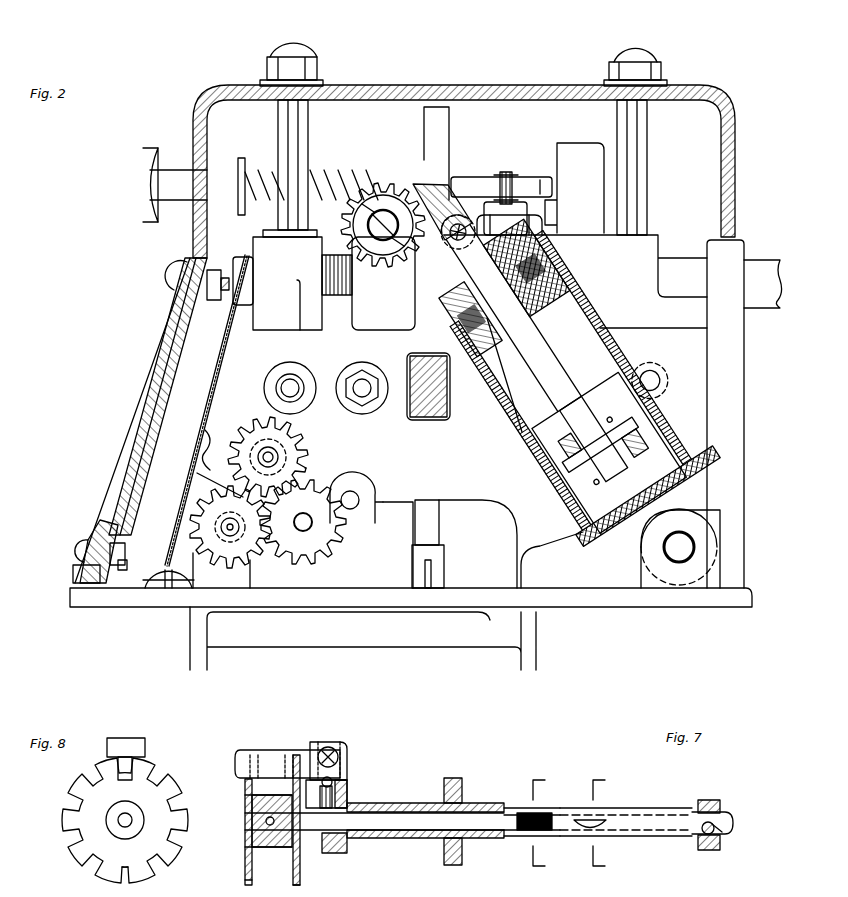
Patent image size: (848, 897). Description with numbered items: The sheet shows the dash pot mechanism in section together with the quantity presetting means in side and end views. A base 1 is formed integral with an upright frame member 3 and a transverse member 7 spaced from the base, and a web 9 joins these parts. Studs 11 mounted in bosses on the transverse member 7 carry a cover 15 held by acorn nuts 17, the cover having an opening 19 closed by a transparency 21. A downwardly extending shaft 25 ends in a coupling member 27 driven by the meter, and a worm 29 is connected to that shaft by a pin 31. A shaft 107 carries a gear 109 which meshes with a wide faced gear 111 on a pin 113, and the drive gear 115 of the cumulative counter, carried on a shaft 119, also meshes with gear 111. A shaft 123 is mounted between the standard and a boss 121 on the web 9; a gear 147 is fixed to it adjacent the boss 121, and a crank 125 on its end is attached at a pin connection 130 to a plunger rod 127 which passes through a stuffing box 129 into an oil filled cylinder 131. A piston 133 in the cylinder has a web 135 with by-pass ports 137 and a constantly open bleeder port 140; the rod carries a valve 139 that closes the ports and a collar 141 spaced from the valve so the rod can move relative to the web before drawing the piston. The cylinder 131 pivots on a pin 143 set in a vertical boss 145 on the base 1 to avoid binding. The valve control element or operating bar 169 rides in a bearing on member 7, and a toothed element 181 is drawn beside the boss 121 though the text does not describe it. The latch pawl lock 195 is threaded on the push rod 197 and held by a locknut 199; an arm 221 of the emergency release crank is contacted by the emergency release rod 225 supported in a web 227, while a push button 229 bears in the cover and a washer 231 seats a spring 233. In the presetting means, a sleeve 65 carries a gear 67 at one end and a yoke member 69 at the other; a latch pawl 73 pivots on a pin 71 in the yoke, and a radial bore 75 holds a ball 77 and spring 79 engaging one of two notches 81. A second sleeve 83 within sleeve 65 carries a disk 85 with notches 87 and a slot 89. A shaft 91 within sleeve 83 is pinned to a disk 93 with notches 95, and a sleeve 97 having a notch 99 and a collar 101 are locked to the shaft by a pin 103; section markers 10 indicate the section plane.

In FIG. 2, the base 1 is at (598, 622).
In FIG. 2, the upright frame member 3 is at (746, 403).
In FIG. 2, the transverse member 7 is at (646, 326).
In FIG. 2, the web 9 is at (525, 517).
In FIG. 7, the web 9 is at (543, 820).
In FIG. 7, the section line 10 is at (606, 820).
In FIG. 2, the studs 11 is at (306, 140).
In FIG. 2, the cover 15 is at (500, 92).
In FIG. 2, the acorn nuts 17 is at (306, 52).
In FIG. 2, the opening 19 is at (112, 500).
In FIG. 2, the transparency 21 is at (142, 468).
In FIG. 2, the shaft 25 is at (438, 518).
In FIG. 2, the coupling member 27 is at (444, 558).
In FIG. 2, the worm 29 is at (407, 415).
In FIG. 2, the pin 31 is at (424, 360).
In FIG. 7, the sleeve 65 is at (383, 805).
In FIG. 7, the gear 67 is at (458, 780).
In FIG. 8, the yoke member 69 is at (143, 745).
In FIG. 7, the yoke member 69 is at (338, 853).
In FIG. 7, the pin 71 is at (330, 745).
In FIG. 8, the latch pawl 73 is at (124, 750).
In FIG. 7, the latch pawl 73 is at (270, 752).
In FIG. 7, the radial bore 75 is at (347, 792).
In FIG. 7, the ball 77 is at (338, 782).
In FIG. 7, the spring 79 is at (334, 780).
In FIG. 7, the notches 81 is at (318, 740).
In FIG. 7, the second sleeve 83 is at (482, 807).
In FIG. 7, the disk 85 is at (300, 858).
In FIG. 7, the notches 87 is at (300, 880).
In FIG. 7, the slot 89 is at (545, 815).
In FIG. 8, the shaft 91 is at (132, 820).
In FIG. 7, the shaft 91 is at (250, 828).
In FIG. 8, the disk 93 is at (170, 780).
In FIG. 7, the disk 93 is at (245, 795).
In FIG. 8, the notches 95 is at (154, 870).
In FIG. 7, the notches 95 is at (245, 877).
In FIG. 7, the sleeve 97 is at (640, 806).
In FIG. 7, the notch 99 is at (585, 832).
In FIG. 7, the collar 101 is at (716, 800).
In FIG. 7, the pin 103 is at (716, 832).
In FIG. 2, the shaft 107 is at (275, 458).
In FIG. 2, the gear 109 is at (307, 464).
In FIG. 2, the wide faced gear 111 is at (312, 560).
In FIG. 2, the pin 113 is at (303, 531).
In FIG. 2, the drive gear 115 is at (250, 565).
In FIG. 2, the shaft 119 is at (224, 534).
In FIG. 2, the boss 121 is at (352, 304).
In FIG. 2, the shaft 123 is at (366, 256).
In FIG. 2, the crank 125 is at (440, 205).
In FIG. 2, the plunger rod 127 is at (540, 332).
In FIG. 2, the stuffing box 129 is at (550, 265).
In FIG. 2, the pin connection 130 is at (452, 242).
In FIG. 2, the cylinder 131 is at (586, 312).
In FIG. 2, the piston 133 is at (585, 497).
In FIG. 2, the web 135 is at (575, 465).
In FIG. 2, the by-pass ports 137 is at (620, 428).
In FIG. 2, the valve 139 is at (548, 434).
In FIG. 2, the bleeder port 140 is at (652, 400).
In FIG. 2, the collar 141 is at (620, 448).
In FIG. 2, the pin 143 is at (696, 545).
In FIG. 2, the boss 145 is at (712, 568).
In FIG. 2, the gear 147 is at (348, 224).
In FIG. 2, the operating bar 169 is at (752, 262).
In FIG. 2, the toothed segment 181 is at (322, 270).
In FIG. 2, the lock 195 is at (513, 231).
In FIG. 2, the push rod 197 is at (500, 176).
In FIG. 2, the locknut 199 is at (527, 212).
In FIG. 2, the arm 221 is at (576, 152).
In FIG. 2, the emergency release rod 225 is at (518, 182).
In FIG. 2, the web 227 is at (449, 140).
In FIG. 2, the push button 229 is at (146, 212).
In FIG. 2, the washer 231 is at (242, 158).
In FIG. 2, the spring 233 is at (336, 170).